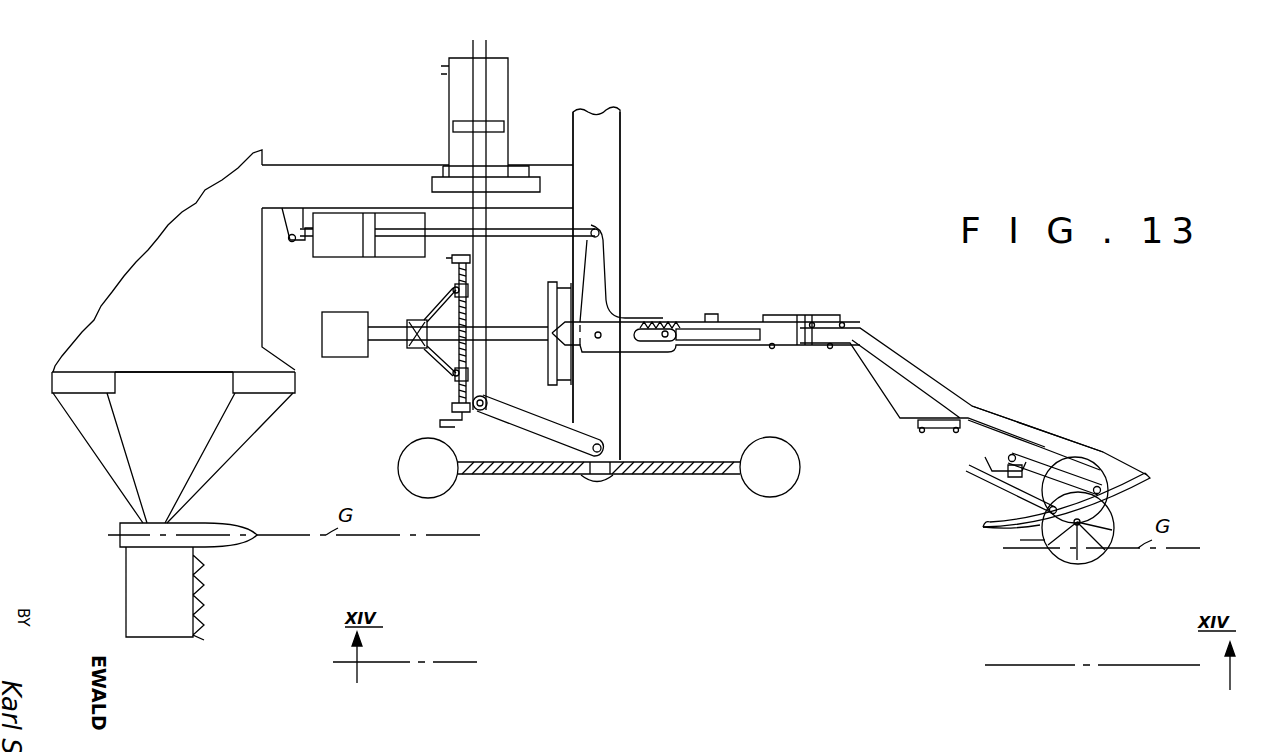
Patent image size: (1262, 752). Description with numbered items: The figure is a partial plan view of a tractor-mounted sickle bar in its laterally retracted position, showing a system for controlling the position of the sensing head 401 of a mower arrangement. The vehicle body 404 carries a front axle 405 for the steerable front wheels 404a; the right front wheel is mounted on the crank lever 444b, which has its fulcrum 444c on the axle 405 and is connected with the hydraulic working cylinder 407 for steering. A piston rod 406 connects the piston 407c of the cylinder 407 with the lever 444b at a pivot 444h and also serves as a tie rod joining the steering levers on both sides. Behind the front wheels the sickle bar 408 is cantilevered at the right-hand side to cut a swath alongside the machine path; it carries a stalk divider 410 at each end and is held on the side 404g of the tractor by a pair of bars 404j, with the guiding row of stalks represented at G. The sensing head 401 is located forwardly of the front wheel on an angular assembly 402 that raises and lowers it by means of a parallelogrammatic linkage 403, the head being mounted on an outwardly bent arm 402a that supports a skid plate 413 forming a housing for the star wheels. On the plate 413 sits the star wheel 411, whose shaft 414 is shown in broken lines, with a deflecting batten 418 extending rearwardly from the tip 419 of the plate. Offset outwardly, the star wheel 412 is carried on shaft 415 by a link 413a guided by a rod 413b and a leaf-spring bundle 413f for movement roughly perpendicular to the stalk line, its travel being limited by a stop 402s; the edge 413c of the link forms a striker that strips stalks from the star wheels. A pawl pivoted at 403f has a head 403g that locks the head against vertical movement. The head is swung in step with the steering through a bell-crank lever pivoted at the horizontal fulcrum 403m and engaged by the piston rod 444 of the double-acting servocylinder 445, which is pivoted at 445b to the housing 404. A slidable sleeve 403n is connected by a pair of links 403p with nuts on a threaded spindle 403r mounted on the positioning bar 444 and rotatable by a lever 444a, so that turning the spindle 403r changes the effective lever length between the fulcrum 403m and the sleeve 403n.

The sensing head 401 is at (1118, 396).
The angular assembly 402 is at (950, 398).
The outwardly bent arm 402a is at (987, 418).
The stop 402s is at (990, 458).
The parallelogrammatic linkage 403 is at (460, 385).
The pawl pivot 403f is at (469, 289).
The pawl head 403g is at (470, 293).
The horizontal fulcrum 403m is at (666, 330).
The slidable sleeve 403n is at (413, 320).
The links 403p is at (437, 305).
The threaded spindle 403r is at (465, 273).
The vehicle body 404 is at (178, 234).
The front wheels 404a is at (753, 477).
The side of the tractor 404g is at (161, 374).
The bars 404j is at (90, 443).
The front axle 405 is at (622, 208).
The piston rod 406 is at (487, 143).
The working cylinder 407 is at (510, 71).
The piston 407c is at (459, 121).
The sickle bar 408 is at (177, 600).
The stalk divider 410 is at (213, 523).
The star wheel 411 is at (1062, 467).
The star wheel 412 is at (1099, 552).
The skid plate 413 is at (1125, 470).
The link 413a is at (1037, 542).
The rod 413b is at (1030, 460).
The edge 413c is at (993, 532).
The leaf-spring bundle 413f is at (985, 487).
The shaft 414 is at (1105, 447).
The shaft 415 is at (1077, 526).
The deflecting batten 418 is at (1140, 485).
The tip 419 is at (1143, 473).
The piston rod 444 is at (545, 232).
The lever 444a is at (445, 427).
The crank lever 444b is at (532, 421).
The fulcrum 444c is at (603, 448).
The pivot 444h is at (486, 402).
The servocylinder 445 is at (347, 258).
The pivot 445b is at (298, 245).